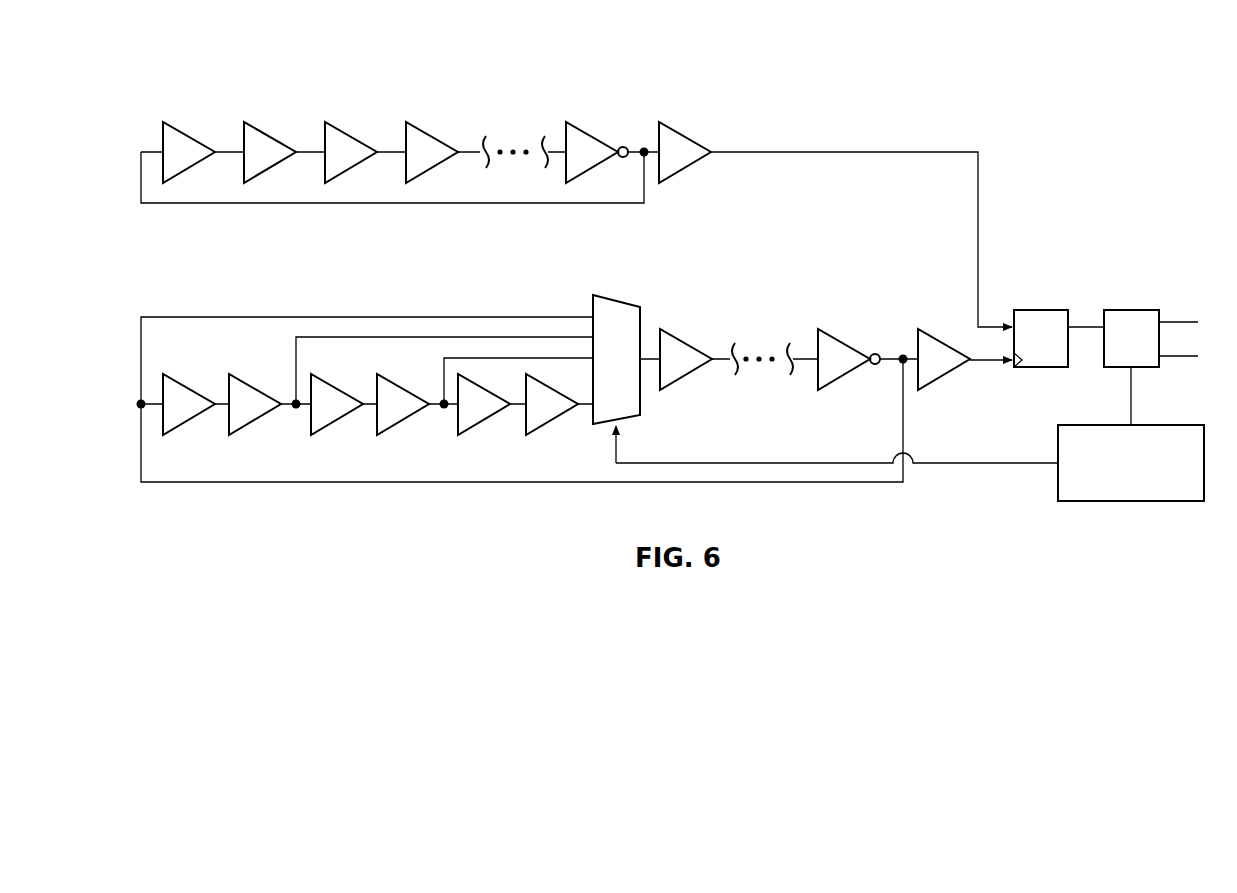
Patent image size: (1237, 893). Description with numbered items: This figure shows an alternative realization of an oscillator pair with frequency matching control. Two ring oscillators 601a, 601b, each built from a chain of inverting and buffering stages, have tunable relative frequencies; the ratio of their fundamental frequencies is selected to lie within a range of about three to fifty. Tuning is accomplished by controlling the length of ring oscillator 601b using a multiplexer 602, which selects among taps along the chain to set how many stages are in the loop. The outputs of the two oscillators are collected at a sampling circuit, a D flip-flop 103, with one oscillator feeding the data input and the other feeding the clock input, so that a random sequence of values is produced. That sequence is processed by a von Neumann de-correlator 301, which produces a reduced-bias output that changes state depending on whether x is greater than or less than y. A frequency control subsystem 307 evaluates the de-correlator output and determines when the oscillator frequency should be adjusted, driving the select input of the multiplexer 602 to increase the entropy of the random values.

The oscillator 601a is at (286, 100).
The ring oscillator 601b is at (270, 304).
The multiplexer 602 is at (609, 294).
The D flip-flop 103 is at (1032, 308).
The von Neumann de-correlator 301 is at (1116, 308).
The frequency control subsystem 307 is at (1083, 502).